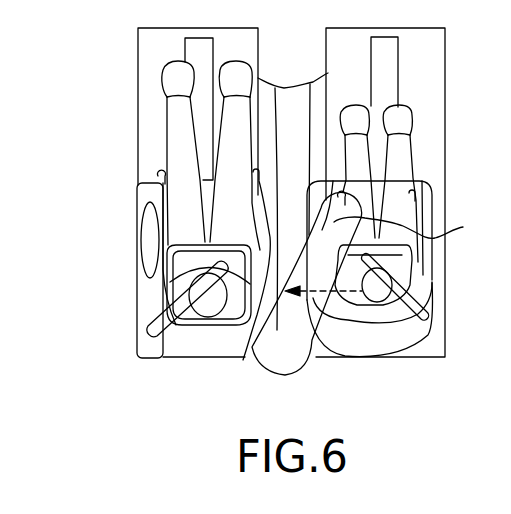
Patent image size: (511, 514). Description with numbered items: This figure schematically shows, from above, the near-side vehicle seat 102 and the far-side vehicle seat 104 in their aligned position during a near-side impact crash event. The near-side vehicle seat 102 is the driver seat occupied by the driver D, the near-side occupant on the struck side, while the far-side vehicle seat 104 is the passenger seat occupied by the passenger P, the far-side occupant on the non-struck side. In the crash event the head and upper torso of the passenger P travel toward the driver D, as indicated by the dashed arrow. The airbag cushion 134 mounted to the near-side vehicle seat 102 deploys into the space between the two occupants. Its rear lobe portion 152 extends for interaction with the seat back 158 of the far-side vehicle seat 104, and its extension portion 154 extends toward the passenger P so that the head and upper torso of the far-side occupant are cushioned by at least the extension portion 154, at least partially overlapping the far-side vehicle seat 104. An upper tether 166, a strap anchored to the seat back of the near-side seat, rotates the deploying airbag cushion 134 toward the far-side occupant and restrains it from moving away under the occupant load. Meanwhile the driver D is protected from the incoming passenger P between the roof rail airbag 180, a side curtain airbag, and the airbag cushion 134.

The near-side vehicle seat 102 is at (182, 340).
The far-side vehicle seat 104 is at (355, 340).
The airbag cushion 134 is at (290, 370).
The rear lobe portion 152 is at (300, 353).
The extension portion 154 is at (417, 227).
The seat back 158 is at (420, 353).
The upper tether 166 is at (227, 337).
The roof rail airbag 180 is at (143, 348).
The driver D is at (167, 148).
The passenger P is at (407, 158).